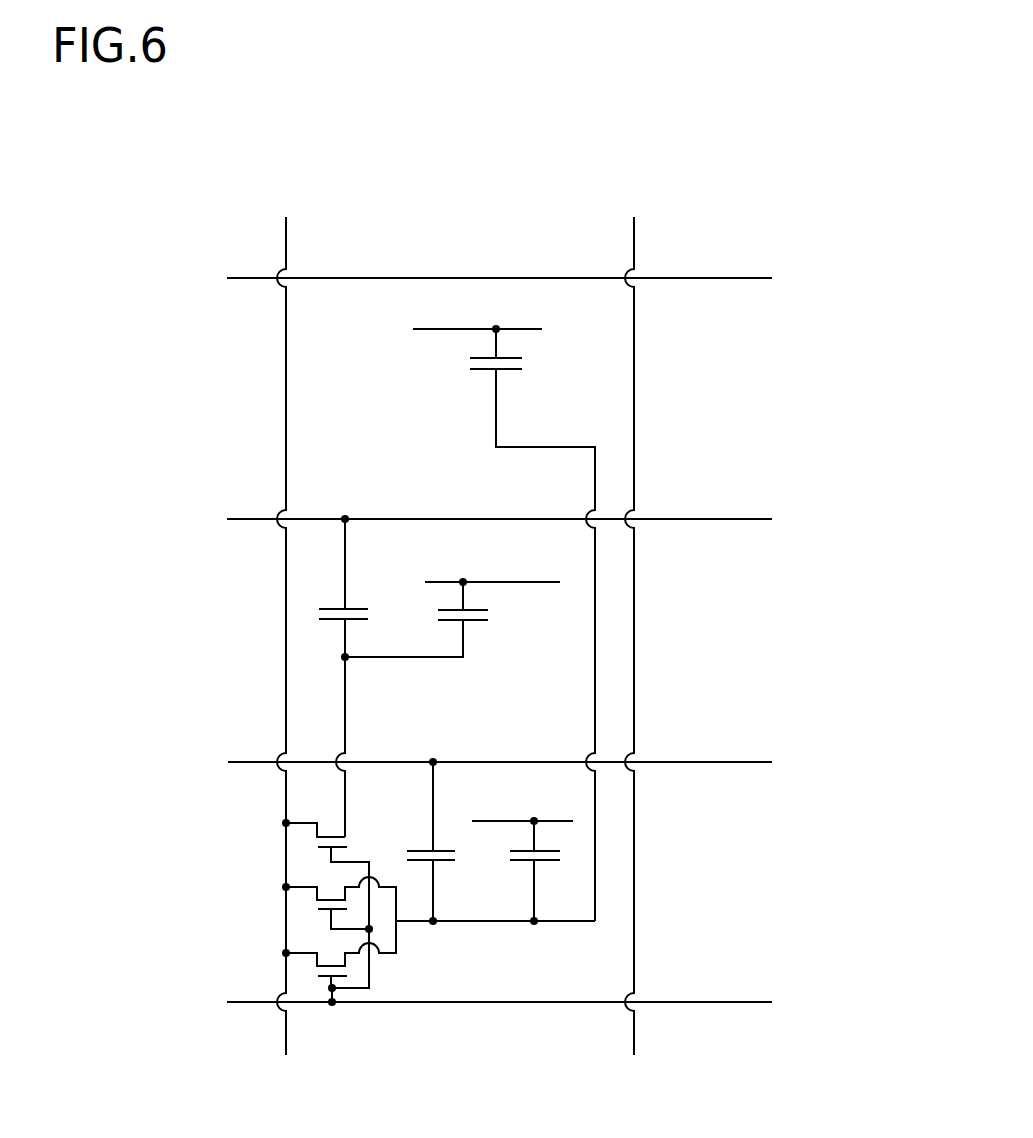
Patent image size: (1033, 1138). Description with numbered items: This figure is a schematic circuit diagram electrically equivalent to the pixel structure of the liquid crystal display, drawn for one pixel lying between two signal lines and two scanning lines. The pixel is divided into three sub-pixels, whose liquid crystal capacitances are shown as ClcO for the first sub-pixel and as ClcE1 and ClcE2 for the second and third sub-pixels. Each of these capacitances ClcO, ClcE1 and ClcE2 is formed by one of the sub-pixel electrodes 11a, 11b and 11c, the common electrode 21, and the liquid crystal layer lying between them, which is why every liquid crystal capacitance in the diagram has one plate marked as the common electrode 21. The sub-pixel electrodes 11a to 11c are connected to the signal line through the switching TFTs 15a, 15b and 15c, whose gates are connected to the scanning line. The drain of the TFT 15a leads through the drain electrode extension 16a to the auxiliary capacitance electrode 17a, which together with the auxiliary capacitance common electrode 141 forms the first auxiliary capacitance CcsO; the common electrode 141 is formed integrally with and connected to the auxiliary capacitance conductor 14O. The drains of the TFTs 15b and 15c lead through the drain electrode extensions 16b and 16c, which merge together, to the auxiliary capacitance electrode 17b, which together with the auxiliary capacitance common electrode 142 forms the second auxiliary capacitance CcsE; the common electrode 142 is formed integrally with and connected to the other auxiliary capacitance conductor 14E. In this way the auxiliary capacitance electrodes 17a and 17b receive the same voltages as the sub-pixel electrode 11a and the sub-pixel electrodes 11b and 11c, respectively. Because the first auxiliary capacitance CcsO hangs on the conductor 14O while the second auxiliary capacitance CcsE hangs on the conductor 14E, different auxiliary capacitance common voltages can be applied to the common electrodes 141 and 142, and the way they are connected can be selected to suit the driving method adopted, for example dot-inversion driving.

The auxiliary capacitance conductor 14O is at (458, 519).
The auxiliary capacitance conductor 14E is at (470, 761).
The TFT 15a is at (328, 811).
The TFT 15b is at (305, 874).
The TFT 15c is at (328, 941).
The drain electrode extension 16a is at (345, 712).
The drain electrode extension 16b is at (403, 892).
The drain electrode extension 16c is at (397, 945).
The auxiliary capacitance electrode 17a is at (357, 614).
The auxiliary capacitance electrode 17b is at (442, 863).
The sub-pixel electrode 11a is at (480, 625).
The sub-pixel electrode 11b is at (548, 863).
The sub-pixel electrode 11c is at (513, 370).
The common electrode 21 is at (517, 357).
The auxiliary capacitance common electrode 141 is at (358, 598).
The auxiliary capacitance common electrode 142 is at (413, 843).
The first auxiliary capacitance CcsO is at (302, 615).
The second auxiliary capacitance CcsE is at (471, 862).
The liquid crystal capacitance ClcO is at (515, 623).
The liquid crystal capacitance ClcE1 is at (579, 858).
The liquid crystal capacitance ClcE2 is at (450, 369).